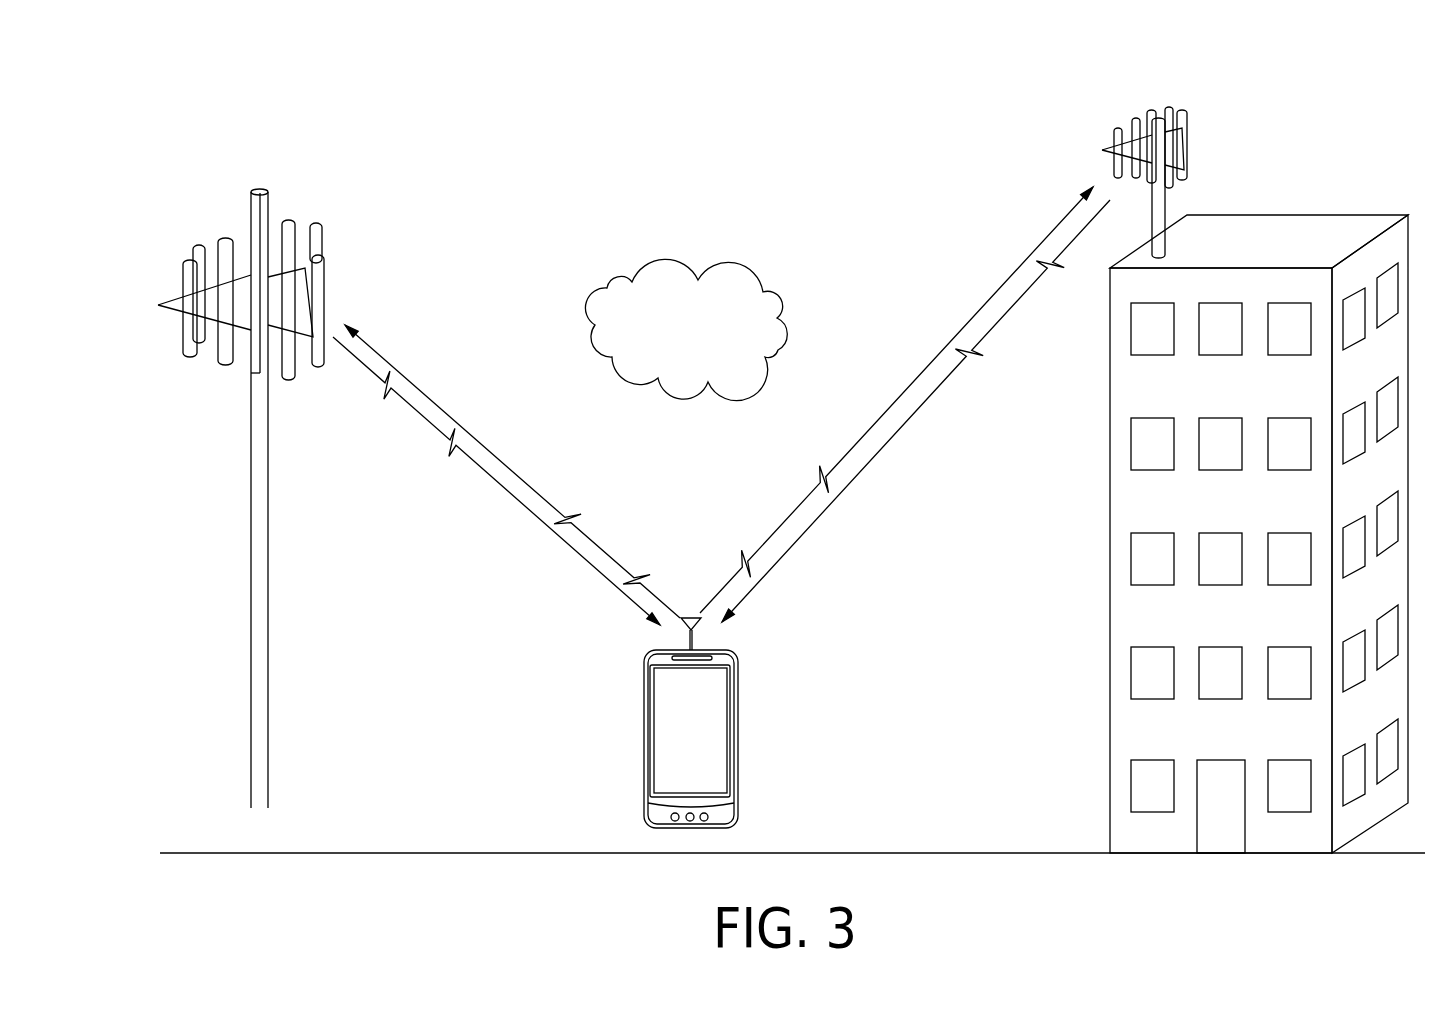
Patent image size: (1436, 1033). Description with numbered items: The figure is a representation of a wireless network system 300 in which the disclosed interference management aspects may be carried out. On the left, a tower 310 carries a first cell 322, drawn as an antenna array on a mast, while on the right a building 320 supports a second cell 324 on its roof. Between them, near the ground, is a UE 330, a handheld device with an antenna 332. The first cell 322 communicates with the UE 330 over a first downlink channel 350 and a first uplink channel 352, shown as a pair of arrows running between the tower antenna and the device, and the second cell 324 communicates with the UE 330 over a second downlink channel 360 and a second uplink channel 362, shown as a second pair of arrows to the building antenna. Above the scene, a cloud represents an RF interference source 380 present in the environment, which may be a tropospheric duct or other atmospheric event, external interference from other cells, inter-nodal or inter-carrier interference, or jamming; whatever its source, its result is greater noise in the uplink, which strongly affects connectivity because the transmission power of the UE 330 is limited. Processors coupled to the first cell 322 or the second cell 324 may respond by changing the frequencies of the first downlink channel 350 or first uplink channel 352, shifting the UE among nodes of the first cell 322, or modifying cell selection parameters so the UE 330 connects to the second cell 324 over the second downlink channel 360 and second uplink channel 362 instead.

The system 300 is at (1364, 92).
The base station tower 310 is at (197, 571).
The building 320 is at (1195, 238).
The first cell 322 is at (214, 352).
The second cell 324 is at (1156, 108).
The UE 330 is at (644, 722).
The mobile device antenna 332 is at (692, 616).
The first downlink channel 350 is at (508, 490).
The first uplink channel 352 is at (441, 408).
The second downlink channel 360 is at (897, 433).
The second uplink channel 362 is at (924, 370).
The RF interference source 380 is at (737, 268).